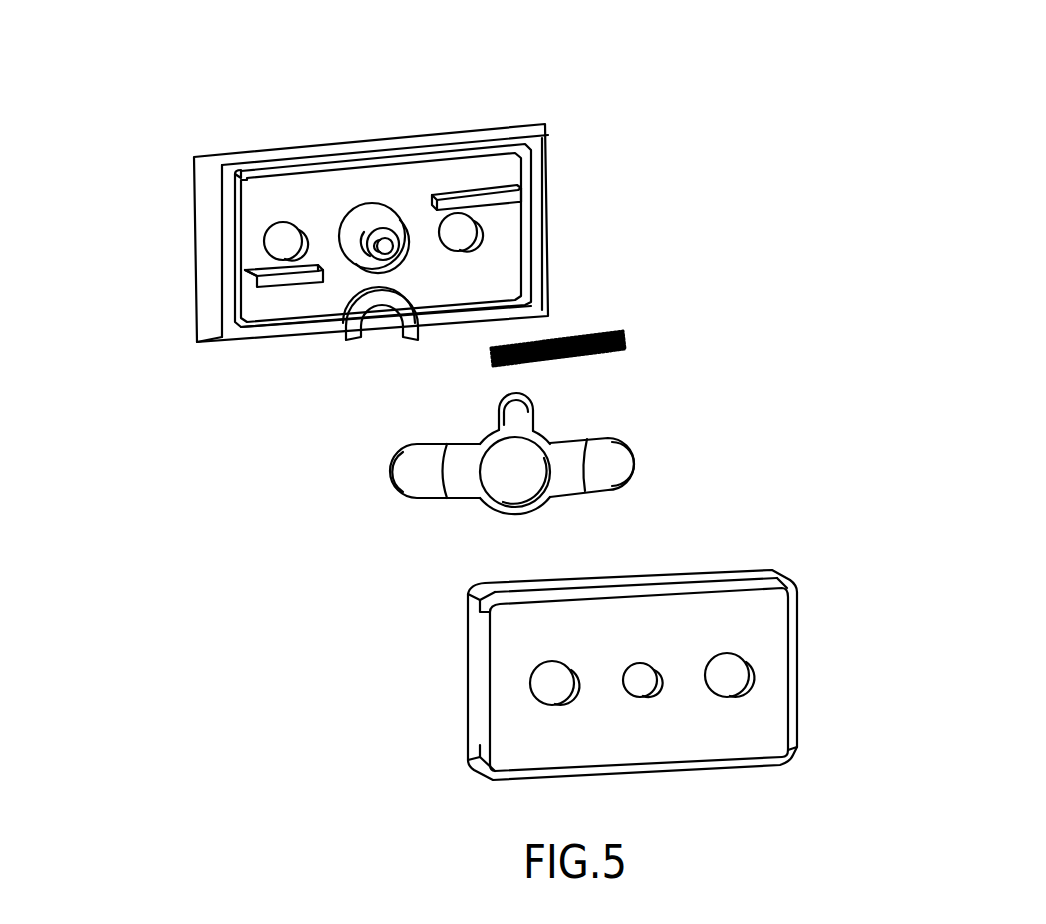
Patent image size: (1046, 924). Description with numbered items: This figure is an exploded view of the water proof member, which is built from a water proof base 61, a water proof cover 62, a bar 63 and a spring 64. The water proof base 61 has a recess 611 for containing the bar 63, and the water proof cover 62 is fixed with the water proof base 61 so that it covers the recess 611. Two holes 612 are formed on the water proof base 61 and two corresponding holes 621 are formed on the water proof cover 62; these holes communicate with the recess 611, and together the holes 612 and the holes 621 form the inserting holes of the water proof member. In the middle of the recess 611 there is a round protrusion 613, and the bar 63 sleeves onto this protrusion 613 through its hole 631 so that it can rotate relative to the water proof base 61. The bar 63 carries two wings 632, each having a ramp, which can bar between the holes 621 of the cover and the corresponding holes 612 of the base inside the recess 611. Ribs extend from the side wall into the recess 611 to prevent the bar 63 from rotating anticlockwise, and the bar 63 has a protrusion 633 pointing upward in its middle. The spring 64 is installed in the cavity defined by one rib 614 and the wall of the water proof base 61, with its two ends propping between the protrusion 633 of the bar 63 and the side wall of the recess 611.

The water proof base 61 is at (543, 128).
The recess 611 is at (270, 200).
The holes 612 is at (465, 232).
The round protrusion 613 is at (357, 237).
The rib 614 is at (470, 198).
The spring 64 is at (622, 333).
The bar 63 is at (563, 483).
The hole 631 is at (523, 483).
The wings 632 is at (423, 478).
The protrusion 633 is at (515, 415).
The water proof cover 62 is at (763, 630).
The holes 621 is at (733, 673).